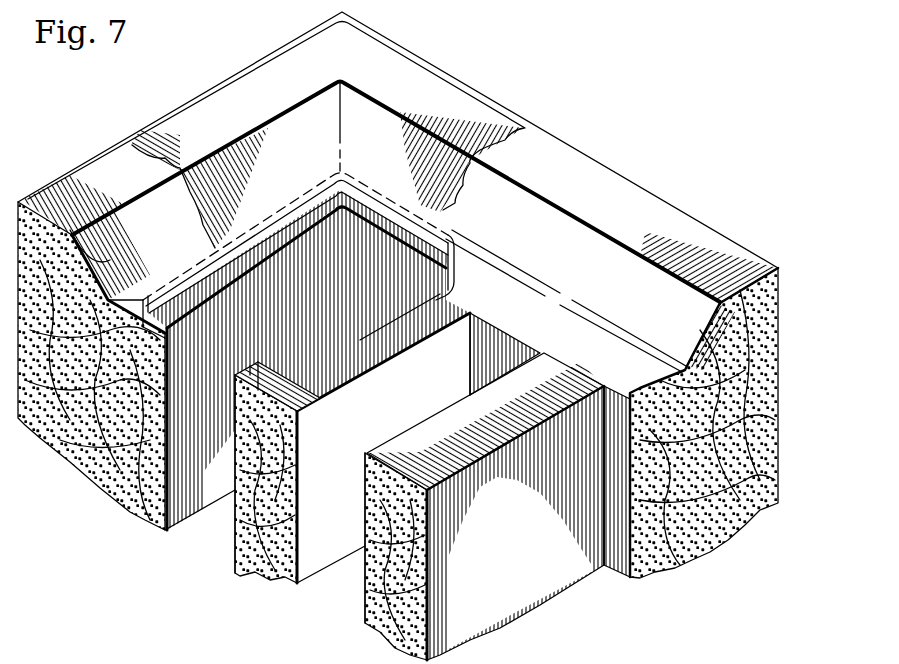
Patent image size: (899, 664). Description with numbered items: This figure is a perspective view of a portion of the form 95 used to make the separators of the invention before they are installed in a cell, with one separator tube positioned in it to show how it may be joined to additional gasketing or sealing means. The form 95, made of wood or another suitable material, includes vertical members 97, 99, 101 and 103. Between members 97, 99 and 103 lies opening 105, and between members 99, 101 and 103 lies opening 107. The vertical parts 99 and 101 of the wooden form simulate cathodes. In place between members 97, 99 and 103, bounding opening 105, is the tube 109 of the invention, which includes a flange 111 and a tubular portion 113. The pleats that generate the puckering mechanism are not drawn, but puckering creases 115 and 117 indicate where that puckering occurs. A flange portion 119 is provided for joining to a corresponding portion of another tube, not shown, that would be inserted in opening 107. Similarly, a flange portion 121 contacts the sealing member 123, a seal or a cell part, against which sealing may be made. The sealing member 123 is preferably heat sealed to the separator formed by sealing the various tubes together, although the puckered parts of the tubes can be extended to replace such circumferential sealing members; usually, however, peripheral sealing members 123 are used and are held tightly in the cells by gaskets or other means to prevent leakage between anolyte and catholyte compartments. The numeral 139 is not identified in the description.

The form 95 is at (596, 154).
The vertical member 97 is at (77, 462).
The vertical member 99 is at (330, 565).
The vertical member 101 is at (483, 627).
The vertical member 103 is at (688, 543).
The opening 105 is at (220, 537).
The opening 107 is at (357, 600).
The tube 109 is at (193, 522).
The flange 111 is at (455, 282).
The tubular portion 113 is at (345, 342).
The puckering crease 115 is at (365, 220).
The puckering crease 117 is at (465, 240).
The flange portion 119 is at (400, 300).
The flange portion 121 is at (440, 227).
The sealing member 123 is at (273, 65).
The reference line 139 is at (621, 648).